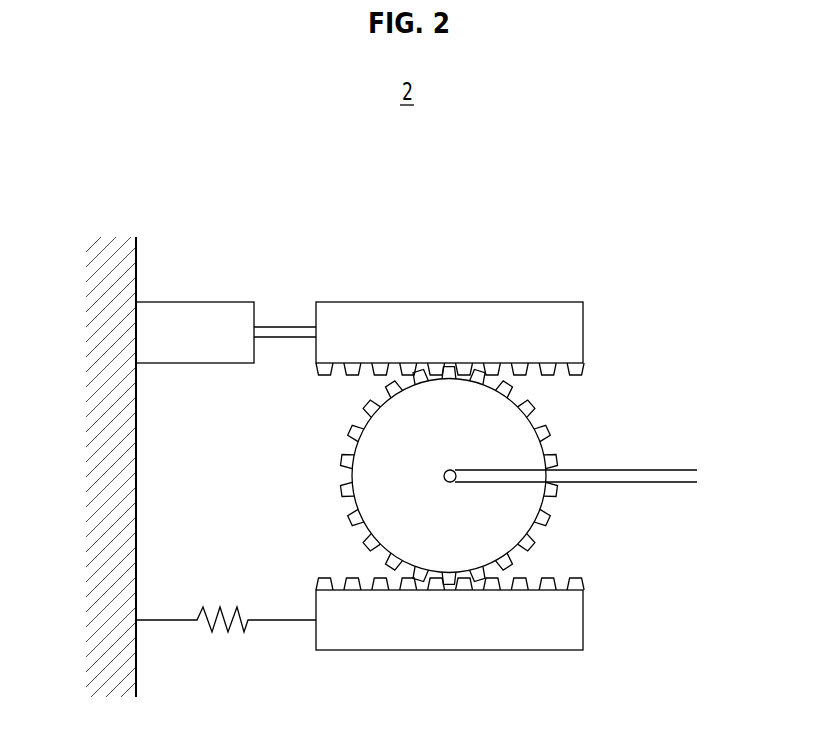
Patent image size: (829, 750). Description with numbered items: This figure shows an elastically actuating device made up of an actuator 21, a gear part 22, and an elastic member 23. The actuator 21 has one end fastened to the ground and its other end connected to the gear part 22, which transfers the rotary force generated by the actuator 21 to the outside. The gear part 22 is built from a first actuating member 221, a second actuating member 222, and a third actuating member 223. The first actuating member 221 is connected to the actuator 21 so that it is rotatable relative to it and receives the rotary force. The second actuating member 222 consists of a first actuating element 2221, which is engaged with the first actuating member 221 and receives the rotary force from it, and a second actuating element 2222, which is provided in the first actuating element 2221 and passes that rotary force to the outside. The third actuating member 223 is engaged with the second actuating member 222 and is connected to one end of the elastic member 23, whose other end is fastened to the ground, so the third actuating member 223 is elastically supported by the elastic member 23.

The actuator 21 is at (195, 302).
The gear part 22 is at (609, 291).
The first actuating member 221 is at (450, 302).
The second actuating member 222 is at (537, 476).
The first actuating element 2221 is at (522, 440).
The second actuating element 2222 is at (570, 468).
The third actuating member 223 is at (450, 650).
The elastic member 23 is at (208, 625).